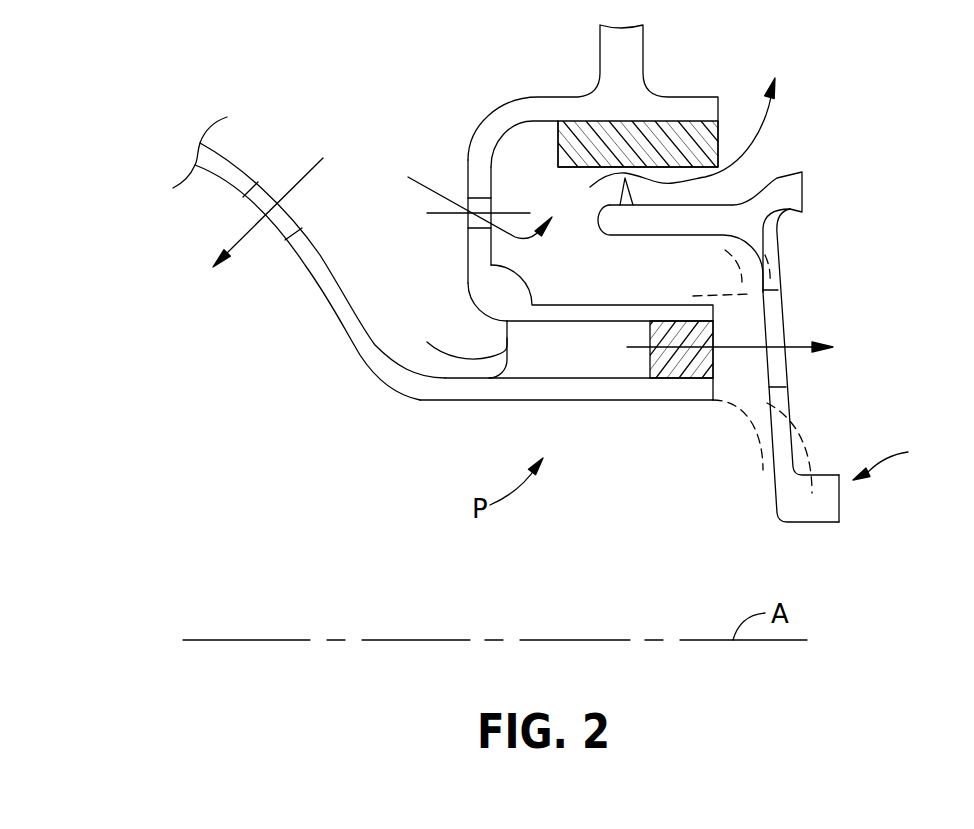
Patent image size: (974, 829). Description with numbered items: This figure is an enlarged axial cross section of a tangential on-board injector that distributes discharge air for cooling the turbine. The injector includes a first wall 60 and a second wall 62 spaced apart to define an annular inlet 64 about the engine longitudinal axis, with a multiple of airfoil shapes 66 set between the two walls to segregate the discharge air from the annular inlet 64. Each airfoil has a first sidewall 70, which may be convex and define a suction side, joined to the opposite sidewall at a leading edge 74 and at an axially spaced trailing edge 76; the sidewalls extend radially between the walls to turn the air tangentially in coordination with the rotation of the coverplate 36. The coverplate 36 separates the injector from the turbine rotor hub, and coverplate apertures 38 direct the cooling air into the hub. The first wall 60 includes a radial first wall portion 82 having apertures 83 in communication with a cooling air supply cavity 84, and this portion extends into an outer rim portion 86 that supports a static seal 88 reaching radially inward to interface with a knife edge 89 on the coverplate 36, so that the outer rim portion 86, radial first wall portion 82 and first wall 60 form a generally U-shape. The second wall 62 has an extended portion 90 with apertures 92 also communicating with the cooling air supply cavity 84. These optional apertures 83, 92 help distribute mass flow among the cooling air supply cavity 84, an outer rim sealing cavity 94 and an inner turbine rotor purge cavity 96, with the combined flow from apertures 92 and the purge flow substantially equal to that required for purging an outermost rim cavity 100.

The coverplate 36 is at (888, 480).
The coverplate apertures 38 is at (782, 315).
The first wall 60 is at (595, 312).
The second wall 62 is at (597, 388).
The annular inlet 64 is at (492, 345).
The airfoil shapes 66 is at (582, 365).
The first sidewall 70 is at (518, 327).
The leading edge 74 is at (452, 341).
The trailing edge 76 is at (713, 333).
The radial first wall portion 82 is at (478, 178).
The apertures 83 is at (493, 205).
The cooling air supply cavity 84 is at (380, 205).
The outer rim portion 86 is at (540, 107).
The static seal 88 is at (660, 140).
The knife edge 89 is at (623, 182).
The extended portion 90 is at (325, 296).
The apertures 92 is at (265, 197).
The outer rim sealing cavity 94 is at (578, 288).
The inner turbine rotor purge cavity 96 is at (295, 410).
The outermost rim cavity 100 is at (838, 106).